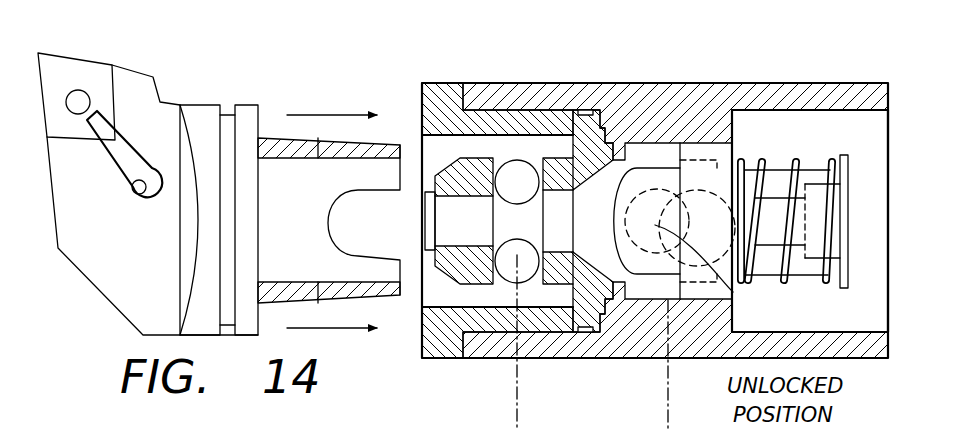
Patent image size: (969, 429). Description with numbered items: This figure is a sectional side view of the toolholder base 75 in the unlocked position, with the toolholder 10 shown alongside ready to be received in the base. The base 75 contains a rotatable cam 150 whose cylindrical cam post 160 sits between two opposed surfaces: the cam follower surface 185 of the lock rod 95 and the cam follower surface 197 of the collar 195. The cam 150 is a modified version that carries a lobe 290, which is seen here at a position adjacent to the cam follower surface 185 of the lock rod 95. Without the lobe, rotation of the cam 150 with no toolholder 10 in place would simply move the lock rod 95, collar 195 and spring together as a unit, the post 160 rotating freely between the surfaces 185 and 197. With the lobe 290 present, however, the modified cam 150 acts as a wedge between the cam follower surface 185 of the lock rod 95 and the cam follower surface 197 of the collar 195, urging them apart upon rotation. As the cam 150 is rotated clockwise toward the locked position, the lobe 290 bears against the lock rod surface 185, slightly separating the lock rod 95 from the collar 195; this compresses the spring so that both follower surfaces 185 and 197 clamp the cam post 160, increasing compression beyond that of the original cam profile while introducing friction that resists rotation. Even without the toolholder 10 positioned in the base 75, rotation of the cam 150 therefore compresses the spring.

The toolholder 10 is at (233, 84).
The toolholder base 75 is at (793, 92).
The lock rod 95 is at (462, 215).
The cam 150 is at (702, 195).
The cam post 160 is at (733, 292).
The cam follower surface of the lock rod 185 is at (627, 202).
The collar 195 is at (727, 185).
The cam follower surface of the collar 197 is at (665, 285).
The lobe 290 is at (645, 300).